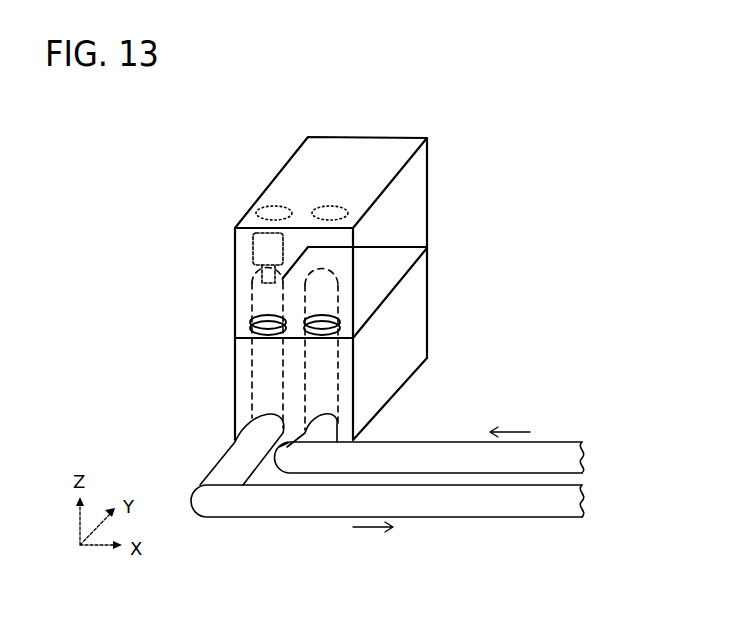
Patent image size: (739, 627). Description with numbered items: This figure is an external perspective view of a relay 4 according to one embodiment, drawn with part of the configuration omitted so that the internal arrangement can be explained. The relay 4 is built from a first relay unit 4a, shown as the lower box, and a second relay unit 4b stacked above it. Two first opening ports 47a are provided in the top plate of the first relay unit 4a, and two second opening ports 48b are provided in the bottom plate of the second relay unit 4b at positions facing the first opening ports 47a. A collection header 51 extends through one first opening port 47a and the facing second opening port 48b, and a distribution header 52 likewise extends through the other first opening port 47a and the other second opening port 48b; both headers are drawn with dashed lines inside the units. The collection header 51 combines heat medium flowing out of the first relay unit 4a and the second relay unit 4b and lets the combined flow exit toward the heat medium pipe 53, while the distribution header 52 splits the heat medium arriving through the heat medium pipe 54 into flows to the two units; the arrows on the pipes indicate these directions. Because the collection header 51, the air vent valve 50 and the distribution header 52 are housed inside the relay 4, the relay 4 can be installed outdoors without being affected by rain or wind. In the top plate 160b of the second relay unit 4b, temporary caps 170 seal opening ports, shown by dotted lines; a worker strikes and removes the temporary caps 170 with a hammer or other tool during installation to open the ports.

The relay 4 is at (394, 288).
The first relay unit 4a is at (428, 290).
The second relay unit 4b is at (428, 220).
The top plate 160b is at (292, 158).
The temporary caps 170 is at (253, 210).
The air vent valve 50 is at (238, 252).
The second opening ports 48b is at (252, 326).
The first opening ports 47a is at (237, 338).
The collection header 51 is at (257, 385).
The distribution header 52 is at (328, 390).
The heat medium pipe 53 is at (515, 517).
The heat medium pipe 54 is at (555, 442).